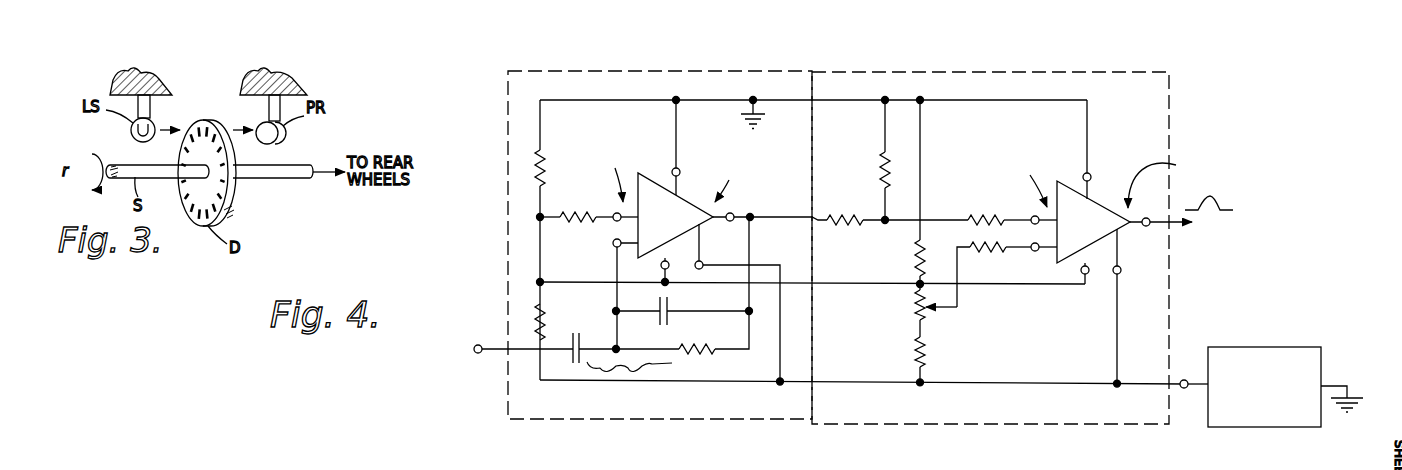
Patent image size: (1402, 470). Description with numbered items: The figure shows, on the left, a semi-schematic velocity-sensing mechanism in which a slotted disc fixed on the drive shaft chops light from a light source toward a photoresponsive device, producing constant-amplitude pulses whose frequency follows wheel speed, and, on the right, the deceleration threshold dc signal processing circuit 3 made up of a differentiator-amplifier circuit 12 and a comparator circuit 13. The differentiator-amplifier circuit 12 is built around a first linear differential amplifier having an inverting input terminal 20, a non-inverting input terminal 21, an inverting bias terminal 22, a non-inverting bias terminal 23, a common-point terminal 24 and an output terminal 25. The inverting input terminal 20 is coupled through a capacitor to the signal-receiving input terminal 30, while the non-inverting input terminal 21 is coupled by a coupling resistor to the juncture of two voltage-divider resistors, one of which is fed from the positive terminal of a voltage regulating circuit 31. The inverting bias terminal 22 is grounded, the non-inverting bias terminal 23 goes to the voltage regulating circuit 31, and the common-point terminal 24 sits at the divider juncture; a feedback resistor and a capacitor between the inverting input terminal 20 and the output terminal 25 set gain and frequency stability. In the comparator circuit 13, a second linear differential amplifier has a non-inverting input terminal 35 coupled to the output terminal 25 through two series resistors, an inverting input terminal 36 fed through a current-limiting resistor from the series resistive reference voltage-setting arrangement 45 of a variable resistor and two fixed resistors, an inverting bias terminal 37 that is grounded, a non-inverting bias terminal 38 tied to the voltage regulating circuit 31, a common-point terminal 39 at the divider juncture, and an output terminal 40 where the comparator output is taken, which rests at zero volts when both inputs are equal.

The deceleration threshold dc signal processing circuit 3 is at (492, 252).
The differentiator-amplifier circuit 12 is at (742, 70).
The comparator circuit 13 is at (913, 71).
The inverting input terminal 20 is at (613, 243).
The non-inverting input terminal 21 is at (614, 213).
The inverting bias terminal 22 is at (679, 169).
The non-inverting bias terminal 23 is at (703, 263).
The common-point terminal 24 is at (661, 265).
The output terminal 25 is at (734, 214).
The signal-receiving input terminal 30 is at (478, 345).
The voltage regulating circuit 31 is at (1215, 347).
The non-inverting input terminal 35 is at (1032, 217).
The inverting input terminal 36 is at (1032, 250).
The inverting bias terminal 37 is at (1090, 173).
The non-inverting bias terminal 38 is at (1121, 270).
The common-point terminal 39 is at (1087, 274).
The output terminal 40 is at (1148, 218).
The series resistive reference voltage-setting arrangement 45 is at (971, 311).